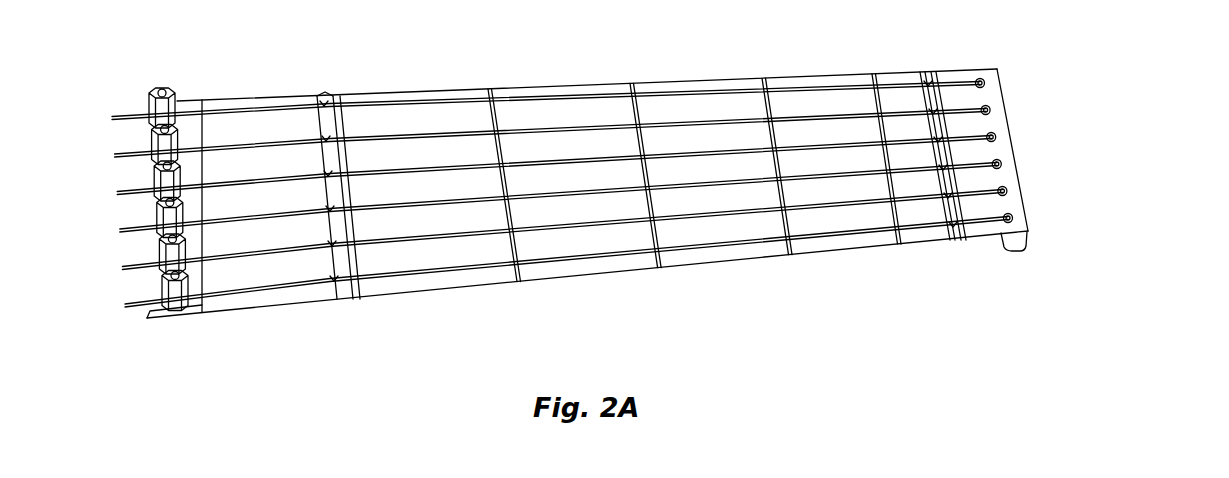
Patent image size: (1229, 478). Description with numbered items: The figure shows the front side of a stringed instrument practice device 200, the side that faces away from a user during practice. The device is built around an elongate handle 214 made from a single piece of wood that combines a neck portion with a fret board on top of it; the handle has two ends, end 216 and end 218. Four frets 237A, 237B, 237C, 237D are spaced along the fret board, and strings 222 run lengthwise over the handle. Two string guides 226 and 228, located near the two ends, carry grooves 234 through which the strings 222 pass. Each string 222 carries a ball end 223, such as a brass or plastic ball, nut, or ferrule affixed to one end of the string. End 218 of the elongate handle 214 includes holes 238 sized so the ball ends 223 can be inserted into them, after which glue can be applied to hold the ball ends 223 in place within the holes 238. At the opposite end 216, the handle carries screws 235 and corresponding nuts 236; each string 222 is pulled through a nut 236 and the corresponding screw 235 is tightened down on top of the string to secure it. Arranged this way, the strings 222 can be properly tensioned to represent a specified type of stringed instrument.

The stringed instrument practice device 200 is at (153, 58).
The elongate handle 214 is at (578, 86).
The end 216 is at (147, 318).
The end 218 is at (998, 70).
The strings 222 is at (481, 265).
The ball end 223 is at (985, 83).
The string guide 226 is at (357, 300).
The string guide 228 is at (958, 241).
The grooves 234 is at (318, 97).
The screws 235 is at (157, 93).
The nuts 236 is at (183, 303).
The fret 237A is at (517, 283).
The fret 237B is at (659, 269).
The fret 237C is at (790, 256).
The fret 237D is at (899, 245).
The holes 238 is at (1014, 250).